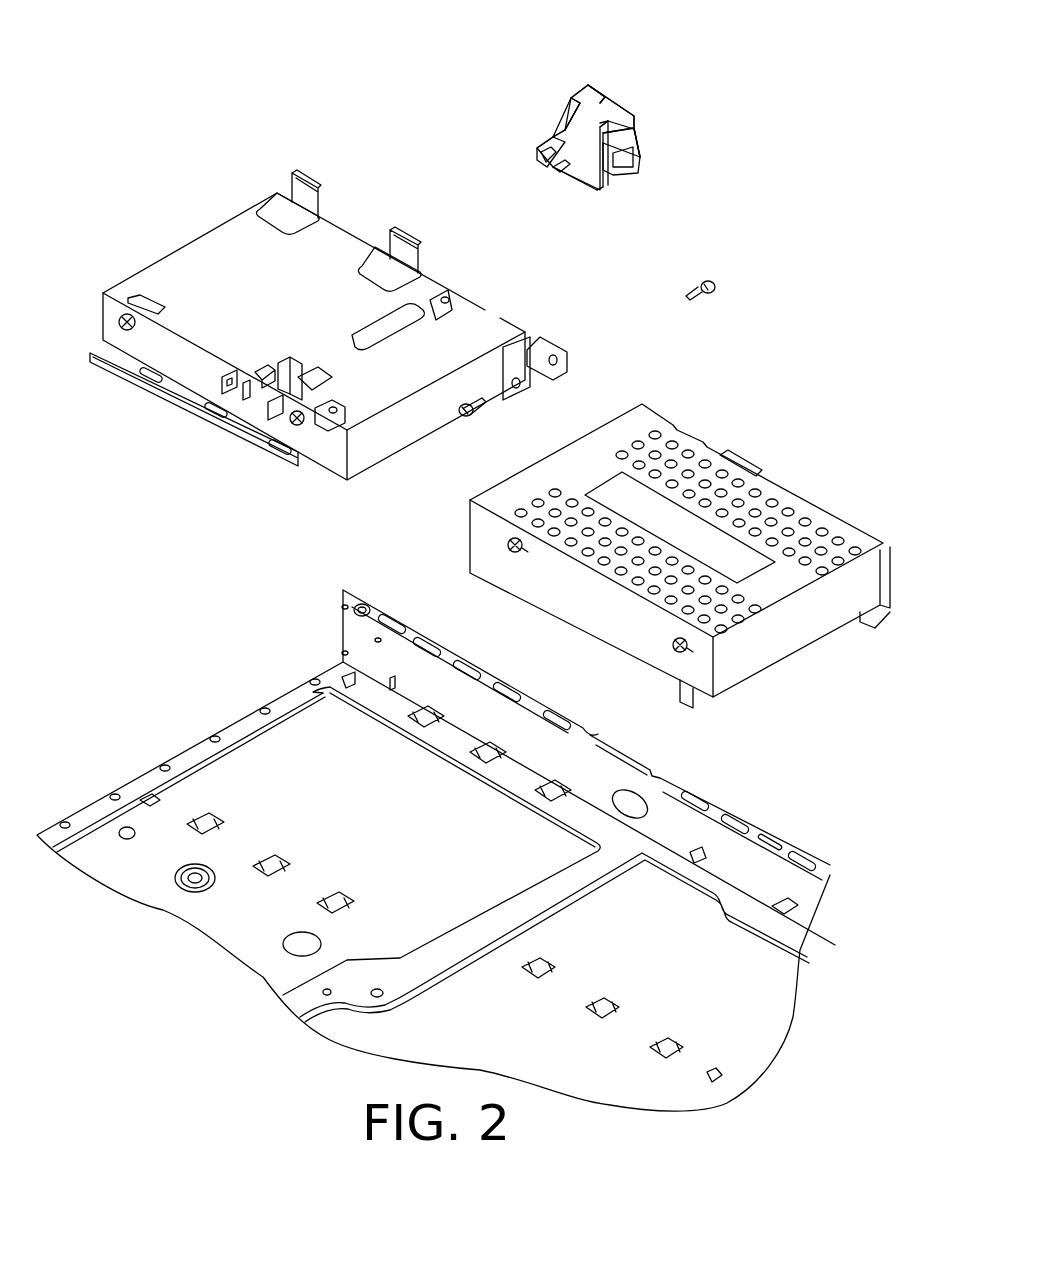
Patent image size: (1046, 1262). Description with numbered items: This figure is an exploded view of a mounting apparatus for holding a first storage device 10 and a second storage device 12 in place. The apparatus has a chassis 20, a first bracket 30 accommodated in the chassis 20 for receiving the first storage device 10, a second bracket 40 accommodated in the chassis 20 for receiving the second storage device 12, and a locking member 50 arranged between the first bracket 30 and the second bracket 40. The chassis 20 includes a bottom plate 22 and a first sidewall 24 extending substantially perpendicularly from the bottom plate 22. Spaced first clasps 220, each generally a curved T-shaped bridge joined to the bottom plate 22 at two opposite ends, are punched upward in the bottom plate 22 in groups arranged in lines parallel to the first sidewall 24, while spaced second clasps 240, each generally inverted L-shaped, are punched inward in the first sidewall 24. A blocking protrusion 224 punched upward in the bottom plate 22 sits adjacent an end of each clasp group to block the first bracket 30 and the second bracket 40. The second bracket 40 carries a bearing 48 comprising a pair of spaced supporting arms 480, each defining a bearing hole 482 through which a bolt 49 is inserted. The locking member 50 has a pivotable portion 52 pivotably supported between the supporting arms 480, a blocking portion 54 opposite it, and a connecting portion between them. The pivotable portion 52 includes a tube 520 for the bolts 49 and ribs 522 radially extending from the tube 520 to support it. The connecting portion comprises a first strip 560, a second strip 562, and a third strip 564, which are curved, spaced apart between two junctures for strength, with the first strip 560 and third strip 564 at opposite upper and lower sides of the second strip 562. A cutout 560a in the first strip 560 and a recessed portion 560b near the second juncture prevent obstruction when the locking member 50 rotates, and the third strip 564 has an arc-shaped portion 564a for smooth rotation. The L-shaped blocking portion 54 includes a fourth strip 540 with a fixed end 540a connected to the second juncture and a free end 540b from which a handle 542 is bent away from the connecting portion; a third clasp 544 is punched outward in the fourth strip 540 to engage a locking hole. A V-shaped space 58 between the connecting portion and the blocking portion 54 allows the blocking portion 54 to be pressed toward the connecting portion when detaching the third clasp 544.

The first storage device 10 is at (763, 642).
The second storage device 12 is at (360, 462).
The chassis 20 is at (234, 967).
The bottom plate 22 is at (303, 727).
The first sidewall 24 is at (590, 770).
The first clasps 220 is at (202, 810).
The blocking protrusion 224 is at (148, 797).
The second clasps 240 is at (786, 900).
The first bracket 30 is at (808, 487).
The second bracket 40 is at (182, 242).
The bearing 48 is at (638, 340).
The supporting arms 480 is at (562, 378).
The bearing hole 482 is at (556, 360).
The bolt 49 is at (715, 290).
The locking member 50 is at (568, 80).
The pivotable portion 52 is at (449, 133).
The tube 520 is at (547, 158).
The ribs 522 is at (550, 147).
The blocking portion 54 is at (722, 100).
The fourth strip 540 is at (613, 157).
The fixed end 540a is at (597, 173).
The free end 540b is at (600, 123).
The handle 542 is at (617, 123).
The third clasp 544 is at (607, 140).
The first strip 560 is at (592, 85).
The cutout 560a is at (580, 103).
The recessed portion 560b is at (600, 97).
The second strip 562 is at (563, 142).
The third strip 564 is at (593, 185).
The arc-shaped portion 564a is at (600, 187).
The V-shaped space 58 is at (563, 167).